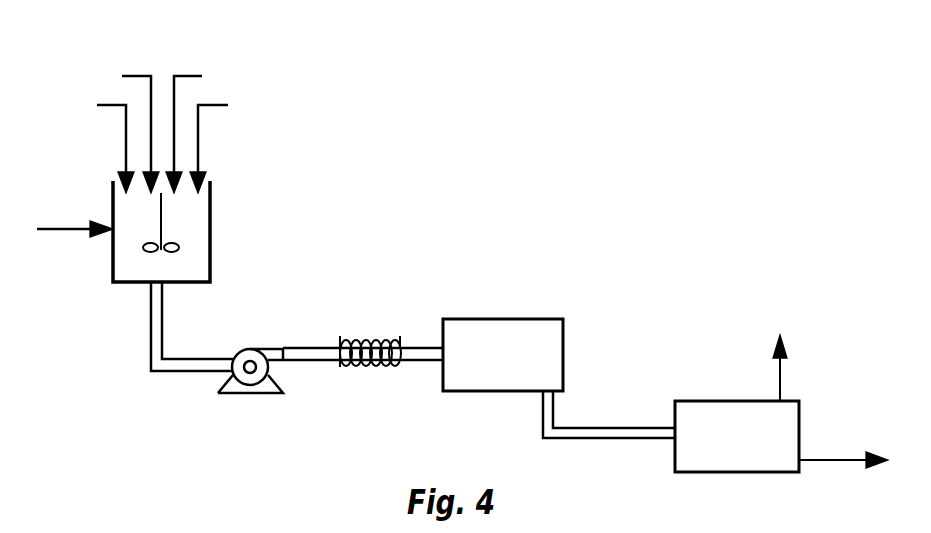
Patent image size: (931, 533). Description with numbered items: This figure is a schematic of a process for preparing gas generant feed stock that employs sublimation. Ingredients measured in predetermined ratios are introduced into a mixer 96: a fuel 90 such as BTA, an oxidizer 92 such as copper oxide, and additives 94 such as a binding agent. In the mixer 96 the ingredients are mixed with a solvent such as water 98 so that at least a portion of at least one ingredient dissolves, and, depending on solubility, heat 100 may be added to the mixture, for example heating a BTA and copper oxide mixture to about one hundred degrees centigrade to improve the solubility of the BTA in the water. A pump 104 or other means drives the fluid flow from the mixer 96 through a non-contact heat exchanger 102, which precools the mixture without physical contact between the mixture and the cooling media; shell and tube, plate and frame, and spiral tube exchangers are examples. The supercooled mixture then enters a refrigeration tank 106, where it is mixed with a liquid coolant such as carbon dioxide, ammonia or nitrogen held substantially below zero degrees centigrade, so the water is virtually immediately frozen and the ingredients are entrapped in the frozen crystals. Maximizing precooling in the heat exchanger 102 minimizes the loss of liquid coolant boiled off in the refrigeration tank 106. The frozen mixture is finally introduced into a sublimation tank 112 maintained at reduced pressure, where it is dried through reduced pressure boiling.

The fuel 90 is at (105, 105).
The oxidizer 92 is at (138, 76).
The additives 94 is at (193, 76).
The mixer 96 is at (212, 262).
The water 98 is at (217, 105).
The heat 100 is at (65, 229).
The non-contact heat exchanger 102 is at (367, 372).
The pump 104 is at (241, 377).
The refrigeration tank 106 is at (503, 355).
The sublimation tank 112 is at (781, 403).